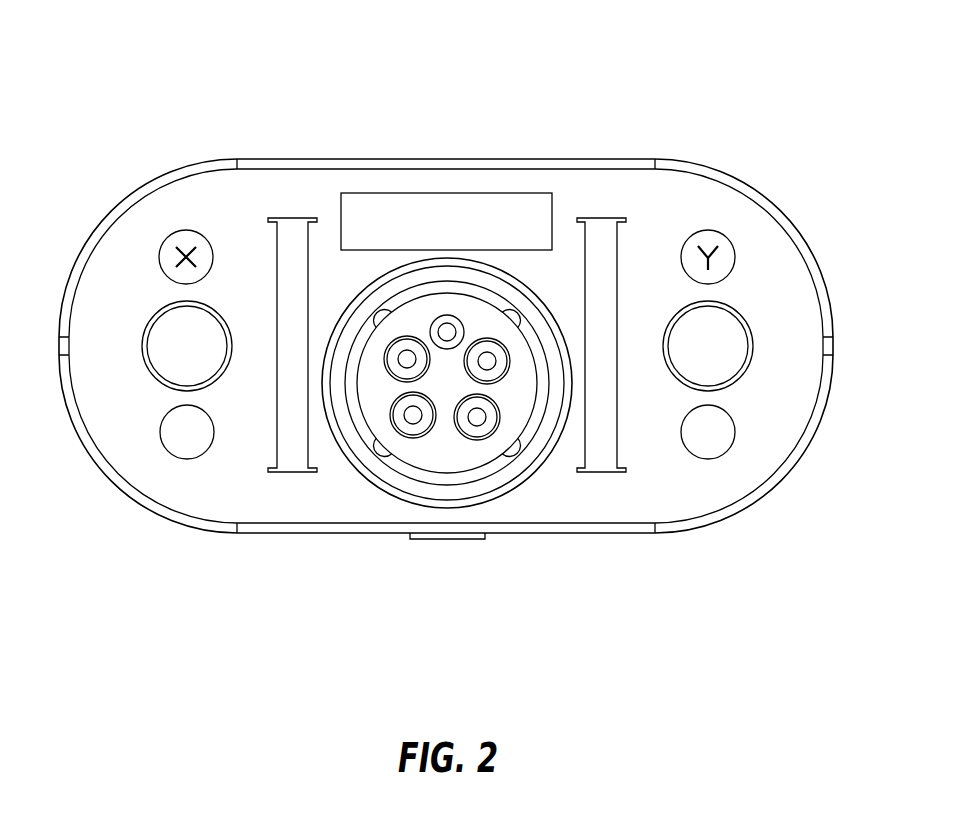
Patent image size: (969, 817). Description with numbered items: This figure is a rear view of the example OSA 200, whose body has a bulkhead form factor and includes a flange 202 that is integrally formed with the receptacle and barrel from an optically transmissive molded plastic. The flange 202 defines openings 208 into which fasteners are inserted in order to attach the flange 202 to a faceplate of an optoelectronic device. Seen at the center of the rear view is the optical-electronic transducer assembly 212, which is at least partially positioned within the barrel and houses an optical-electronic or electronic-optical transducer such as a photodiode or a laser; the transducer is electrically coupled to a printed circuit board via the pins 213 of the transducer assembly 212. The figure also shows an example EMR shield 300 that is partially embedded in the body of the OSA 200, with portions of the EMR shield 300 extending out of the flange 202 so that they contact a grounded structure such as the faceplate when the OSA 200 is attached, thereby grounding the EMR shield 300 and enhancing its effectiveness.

The OSA 200 is at (695, 122).
The flange 202 is at (210, 158).
The openings 208 is at (183, 342).
The EMR shield 300 is at (606, 260).
The optical-electronic transducer assembly 212 is at (447, 452).
The pins 213 is at (390, 363).